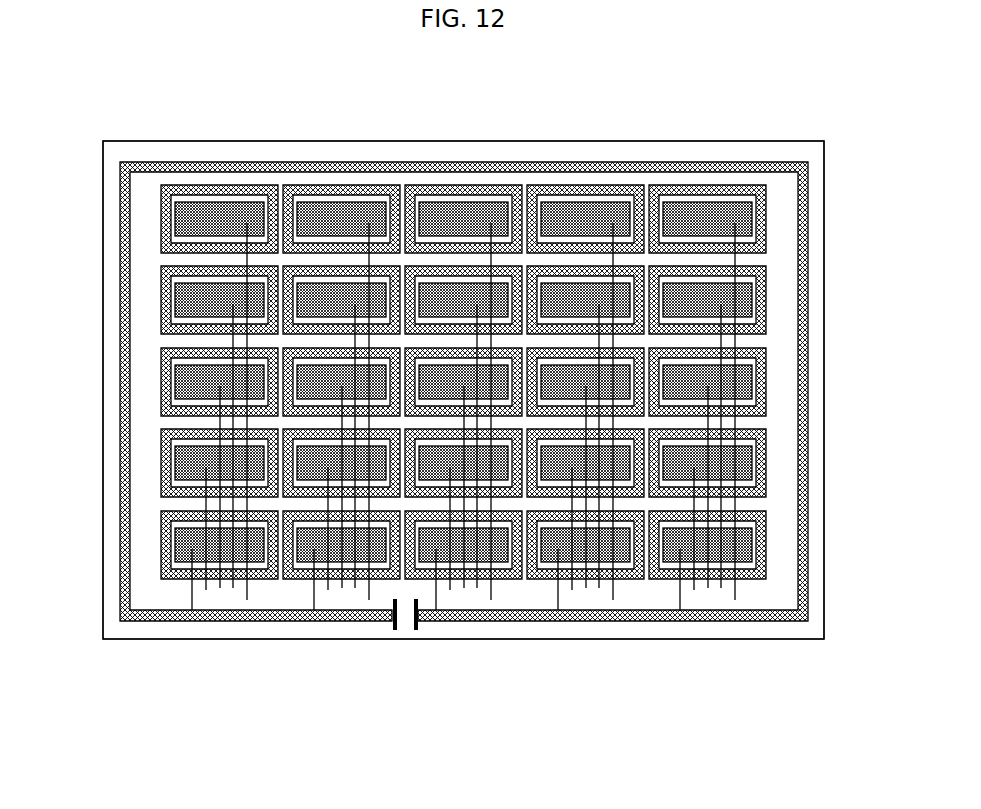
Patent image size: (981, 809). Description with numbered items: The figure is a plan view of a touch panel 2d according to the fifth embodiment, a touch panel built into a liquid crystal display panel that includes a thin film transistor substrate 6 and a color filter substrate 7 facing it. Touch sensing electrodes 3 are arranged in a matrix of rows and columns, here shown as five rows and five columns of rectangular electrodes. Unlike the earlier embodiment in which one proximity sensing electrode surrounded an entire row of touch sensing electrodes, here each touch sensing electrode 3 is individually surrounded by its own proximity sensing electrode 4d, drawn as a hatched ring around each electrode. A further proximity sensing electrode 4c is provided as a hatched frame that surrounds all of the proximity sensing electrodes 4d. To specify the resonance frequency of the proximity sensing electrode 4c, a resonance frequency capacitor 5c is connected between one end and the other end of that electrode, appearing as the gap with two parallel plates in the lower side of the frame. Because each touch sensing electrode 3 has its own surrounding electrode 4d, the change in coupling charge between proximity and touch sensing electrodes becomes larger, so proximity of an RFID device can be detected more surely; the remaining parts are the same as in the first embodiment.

The touch panel 2d is at (842, 109).
The touch sensing electrode 3 is at (191, 202).
The proximity sensing electrode 4c is at (154, 162).
The proximity sensing electrode 4d is at (240, 185).
The resonance frequency capacitor 5c is at (418, 628).
The thin film transistor substrate 6 is at (102, 184).
The color filter substrate 7 is at (825, 182).